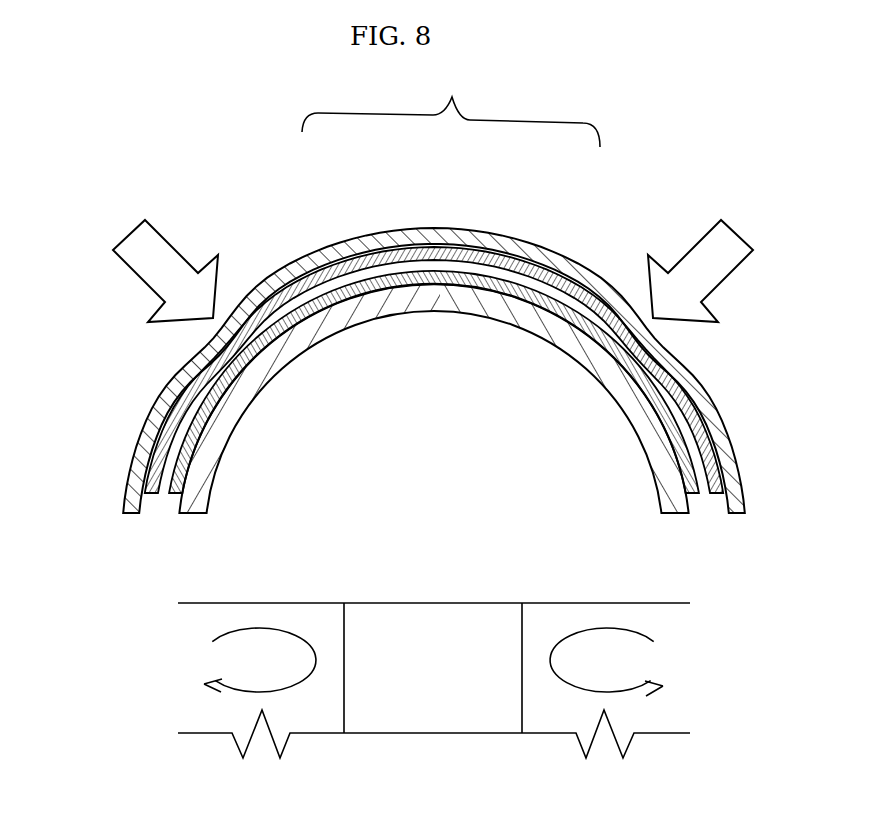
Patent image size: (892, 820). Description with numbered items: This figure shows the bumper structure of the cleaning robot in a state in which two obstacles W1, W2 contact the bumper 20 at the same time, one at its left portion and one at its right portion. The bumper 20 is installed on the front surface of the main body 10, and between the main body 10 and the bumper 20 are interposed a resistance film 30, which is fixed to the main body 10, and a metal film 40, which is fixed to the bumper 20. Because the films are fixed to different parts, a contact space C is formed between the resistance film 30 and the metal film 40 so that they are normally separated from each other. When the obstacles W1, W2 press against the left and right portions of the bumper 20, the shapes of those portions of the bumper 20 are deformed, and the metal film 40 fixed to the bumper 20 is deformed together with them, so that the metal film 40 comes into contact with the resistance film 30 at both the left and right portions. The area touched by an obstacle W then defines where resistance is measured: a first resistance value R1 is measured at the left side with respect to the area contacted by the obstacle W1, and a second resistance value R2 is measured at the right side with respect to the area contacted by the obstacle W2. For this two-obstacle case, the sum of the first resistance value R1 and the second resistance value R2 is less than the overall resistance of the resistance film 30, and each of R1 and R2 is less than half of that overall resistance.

The main body 10 is at (208, 512).
The bumper 20 is at (119, 505).
The resistance film 30 is at (171, 494).
The metal film 40 is at (147, 492).
The contact space C is at (174, 434).
The obstacle W is at (451, 108).
The obstacle W1 is at (168, 249).
The obstacle W2 is at (698, 248).
The first resistance value R1 is at (235, 660).
The second resistance value R2 is at (633, 662).